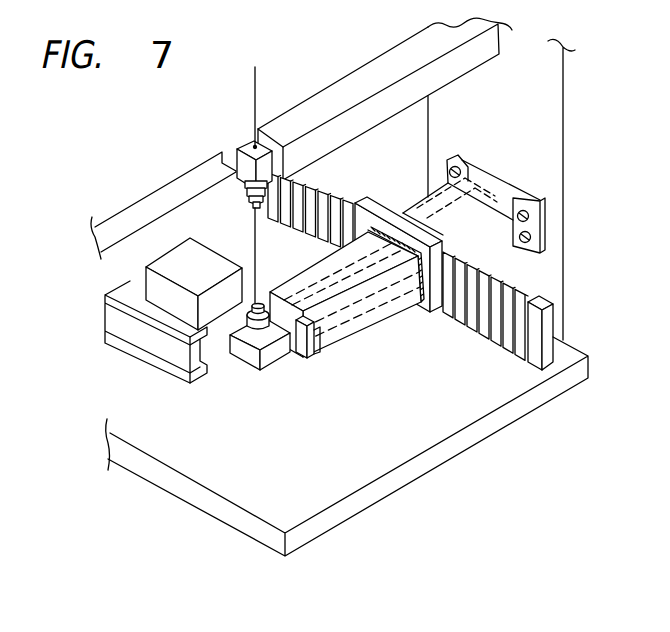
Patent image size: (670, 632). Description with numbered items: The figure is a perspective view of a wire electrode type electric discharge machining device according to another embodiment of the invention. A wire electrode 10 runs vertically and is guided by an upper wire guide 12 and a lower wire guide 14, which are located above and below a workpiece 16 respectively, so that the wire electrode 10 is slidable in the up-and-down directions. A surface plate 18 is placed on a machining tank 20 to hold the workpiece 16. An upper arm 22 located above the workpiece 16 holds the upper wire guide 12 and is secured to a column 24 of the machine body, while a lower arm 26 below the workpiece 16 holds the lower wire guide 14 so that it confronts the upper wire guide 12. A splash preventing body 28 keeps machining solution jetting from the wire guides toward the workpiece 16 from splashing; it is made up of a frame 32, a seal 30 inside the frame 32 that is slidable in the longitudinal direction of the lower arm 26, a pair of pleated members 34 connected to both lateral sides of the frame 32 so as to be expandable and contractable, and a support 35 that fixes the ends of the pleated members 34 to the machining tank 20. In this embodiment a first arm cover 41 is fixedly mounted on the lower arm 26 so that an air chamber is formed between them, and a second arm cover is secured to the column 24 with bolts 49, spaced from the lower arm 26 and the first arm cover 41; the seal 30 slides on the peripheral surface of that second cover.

The wire electrode 10 is at (258, 89).
The upper wire guide 12 is at (240, 149).
The lower wire guide 14 is at (260, 371).
The workpiece 16 is at (163, 255).
The surface plate 18 is at (176, 378).
The machining tank 20 is at (263, 535).
The upper arm 22 is at (346, 82).
The column 24 is at (427, 150).
The lower arm 26 is at (309, 355).
The splash preventing body 28 is at (534, 372).
The seal 30 is at (418, 305).
The frame 32 is at (438, 312).
The pleated members 34 is at (513, 356).
The support 35 is at (548, 321).
The first arm cover 41 is at (319, 353).
The bolts 49 is at (452, 158).